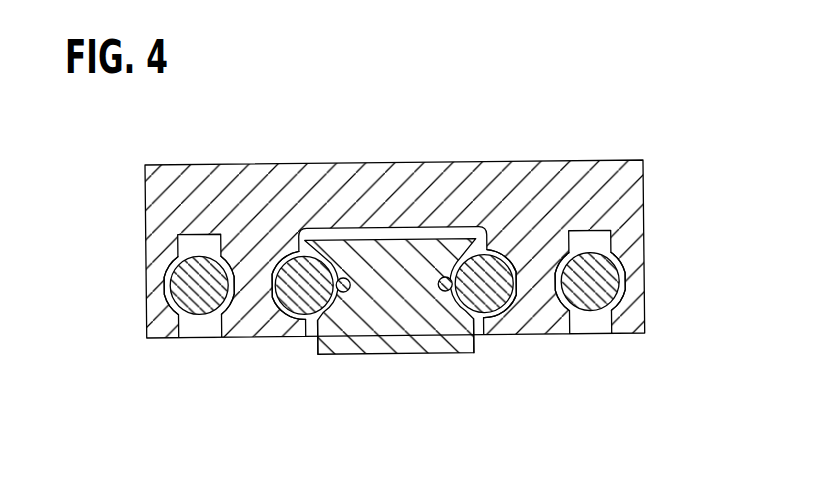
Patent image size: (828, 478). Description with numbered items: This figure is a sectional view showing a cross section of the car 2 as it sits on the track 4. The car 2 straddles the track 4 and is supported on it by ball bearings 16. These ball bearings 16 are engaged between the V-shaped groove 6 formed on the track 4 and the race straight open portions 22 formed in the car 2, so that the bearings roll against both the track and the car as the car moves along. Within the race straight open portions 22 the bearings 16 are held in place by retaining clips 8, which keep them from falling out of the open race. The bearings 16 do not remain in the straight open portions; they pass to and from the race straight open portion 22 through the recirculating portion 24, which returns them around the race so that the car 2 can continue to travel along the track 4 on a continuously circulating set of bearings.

The car 2 is at (230, 164).
The track 4 is at (400, 358).
The V-shaped groove 6 is at (333, 358).
The retaining clips 8 is at (434, 281).
The ball bearings 16 is at (290, 267).
The race straight open portions 22 is at (278, 273).
The recirculating portion 24 is at (166, 292).